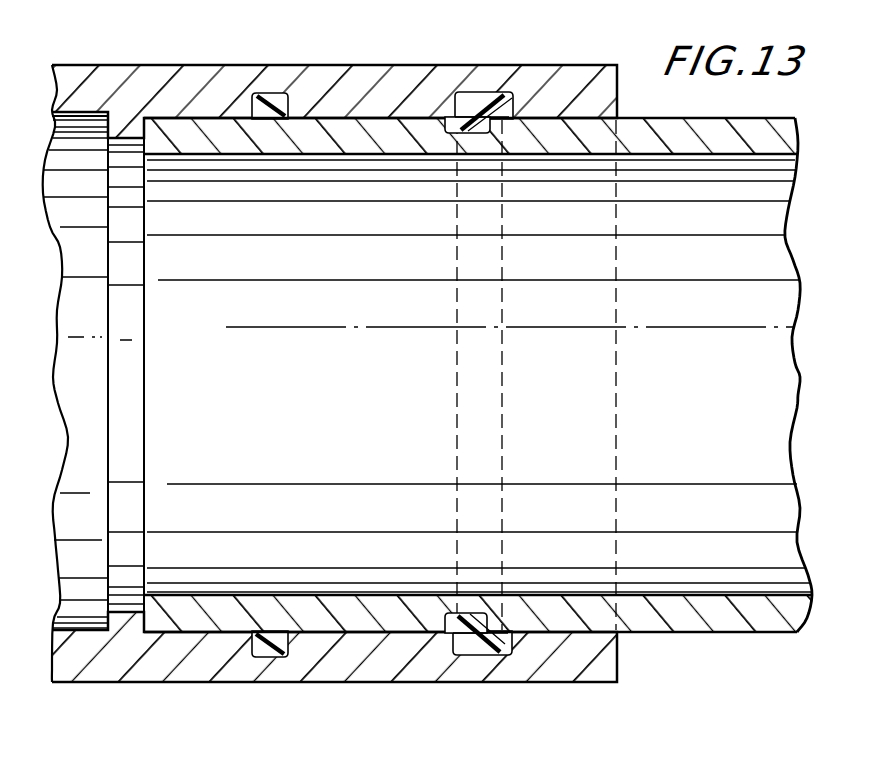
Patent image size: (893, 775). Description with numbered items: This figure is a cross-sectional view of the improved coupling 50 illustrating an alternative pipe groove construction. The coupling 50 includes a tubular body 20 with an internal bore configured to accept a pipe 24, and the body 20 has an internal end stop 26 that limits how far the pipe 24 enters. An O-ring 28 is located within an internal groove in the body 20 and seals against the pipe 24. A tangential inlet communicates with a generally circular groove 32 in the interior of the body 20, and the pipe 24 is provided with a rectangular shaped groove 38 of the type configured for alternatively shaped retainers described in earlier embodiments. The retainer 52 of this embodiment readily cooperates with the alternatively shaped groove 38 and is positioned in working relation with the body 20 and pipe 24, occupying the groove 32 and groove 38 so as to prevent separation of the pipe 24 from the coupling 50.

The tubular body 20 is at (391, 65).
The pipe 24 is at (750, 634).
The internal end stop 26 is at (182, 66).
The O-ring 28 is at (272, 632).
The circular groove 32 is at (463, 128).
The rectangular shaped groove 38 is at (472, 136).
The coupling 50 is at (594, 689).
The retainer 52 is at (463, 627).